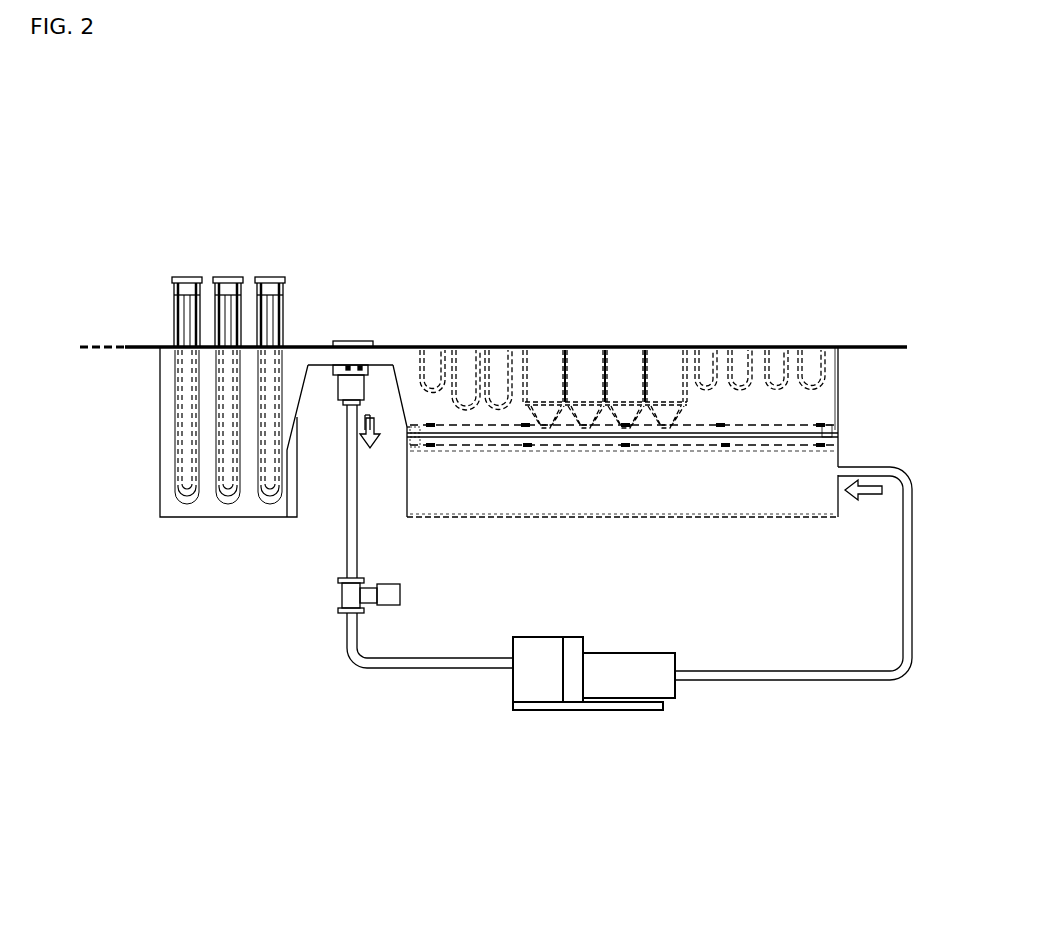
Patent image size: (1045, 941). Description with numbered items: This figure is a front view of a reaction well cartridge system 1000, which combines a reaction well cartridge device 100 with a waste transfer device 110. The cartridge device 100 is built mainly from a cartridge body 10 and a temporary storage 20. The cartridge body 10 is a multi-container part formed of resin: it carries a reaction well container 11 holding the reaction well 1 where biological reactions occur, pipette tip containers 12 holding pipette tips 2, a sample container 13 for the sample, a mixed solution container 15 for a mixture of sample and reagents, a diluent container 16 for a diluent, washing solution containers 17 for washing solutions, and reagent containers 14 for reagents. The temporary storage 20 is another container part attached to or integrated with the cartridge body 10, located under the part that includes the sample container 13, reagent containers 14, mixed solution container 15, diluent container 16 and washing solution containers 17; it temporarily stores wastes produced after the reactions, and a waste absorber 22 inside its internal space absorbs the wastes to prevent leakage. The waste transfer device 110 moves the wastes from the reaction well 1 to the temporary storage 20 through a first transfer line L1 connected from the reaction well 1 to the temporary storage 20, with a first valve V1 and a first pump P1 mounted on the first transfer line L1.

The reaction well cartridge system 1000 is at (98, 128).
The reaction well cartridge device 100 is at (168, 228).
The pipette tips 2 is at (265, 280).
The pipette tip containers 12 is at (275, 420).
The reaction well 1 is at (352, 341).
The reaction well container 11 is at (375, 342).
The sample container 13 is at (430, 347).
The mixed solution container 15 is at (470, 347).
The diluent container 16 is at (498, 347).
The washing solution containers 17 is at (682, 352).
The reagent containers 14 is at (708, 347).
The cartridge body 10 is at (895, 332).
The temporary storage 20 is at (544, 530).
The waste absorber 22 is at (683, 522).
The first valve V1 is at (400, 595).
The first pump P1 is at (612, 685).
The waste transfer device 110 is at (620, 808).
The first transfer line L1 is at (766, 682).